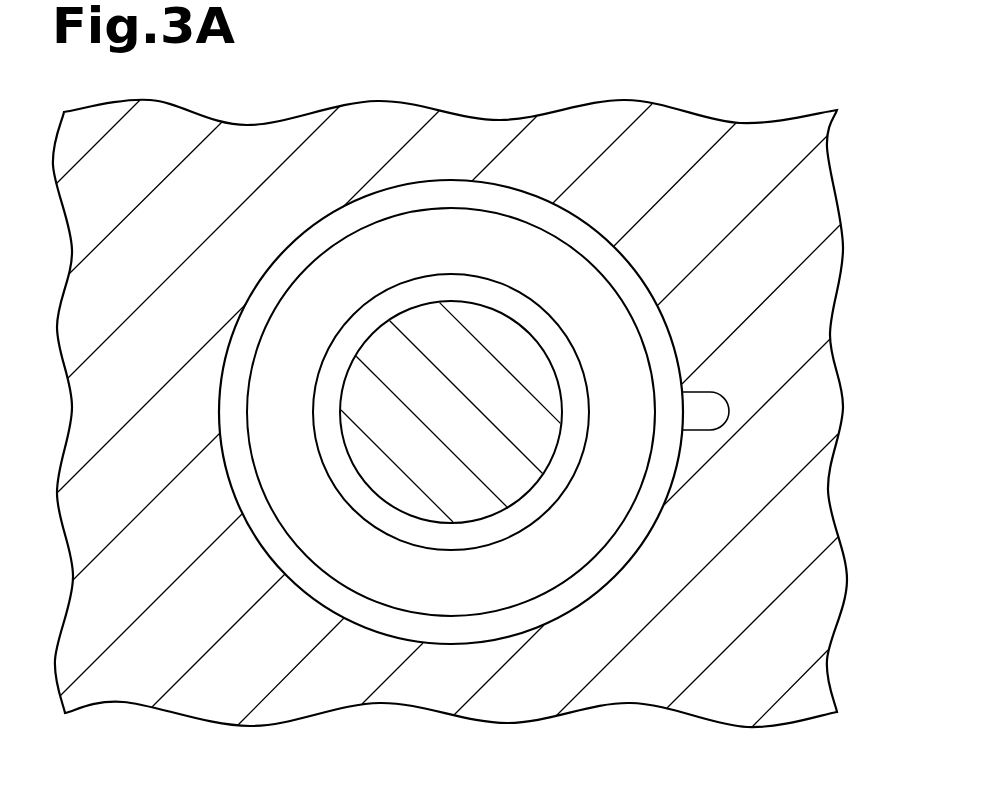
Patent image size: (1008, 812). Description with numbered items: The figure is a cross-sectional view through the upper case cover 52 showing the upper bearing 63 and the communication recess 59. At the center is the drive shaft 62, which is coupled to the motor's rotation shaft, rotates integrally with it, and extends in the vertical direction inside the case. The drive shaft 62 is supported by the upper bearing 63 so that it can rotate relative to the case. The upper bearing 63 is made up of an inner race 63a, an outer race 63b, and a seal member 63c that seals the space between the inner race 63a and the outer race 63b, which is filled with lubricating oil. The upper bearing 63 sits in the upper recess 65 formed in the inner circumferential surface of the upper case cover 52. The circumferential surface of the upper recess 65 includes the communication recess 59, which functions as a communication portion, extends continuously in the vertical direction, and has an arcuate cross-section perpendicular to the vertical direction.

The upper case cover 52 is at (823, 492).
The communication recess 59 is at (720, 404).
The drive shaft 62 is at (502, 328).
The upper bearing 63 is at (373, 618).
The inner race 63a is at (457, 282).
The outer race 63b is at (555, 598).
The seal member 63c is at (262, 483).
The upper recess 65 is at (641, 533).